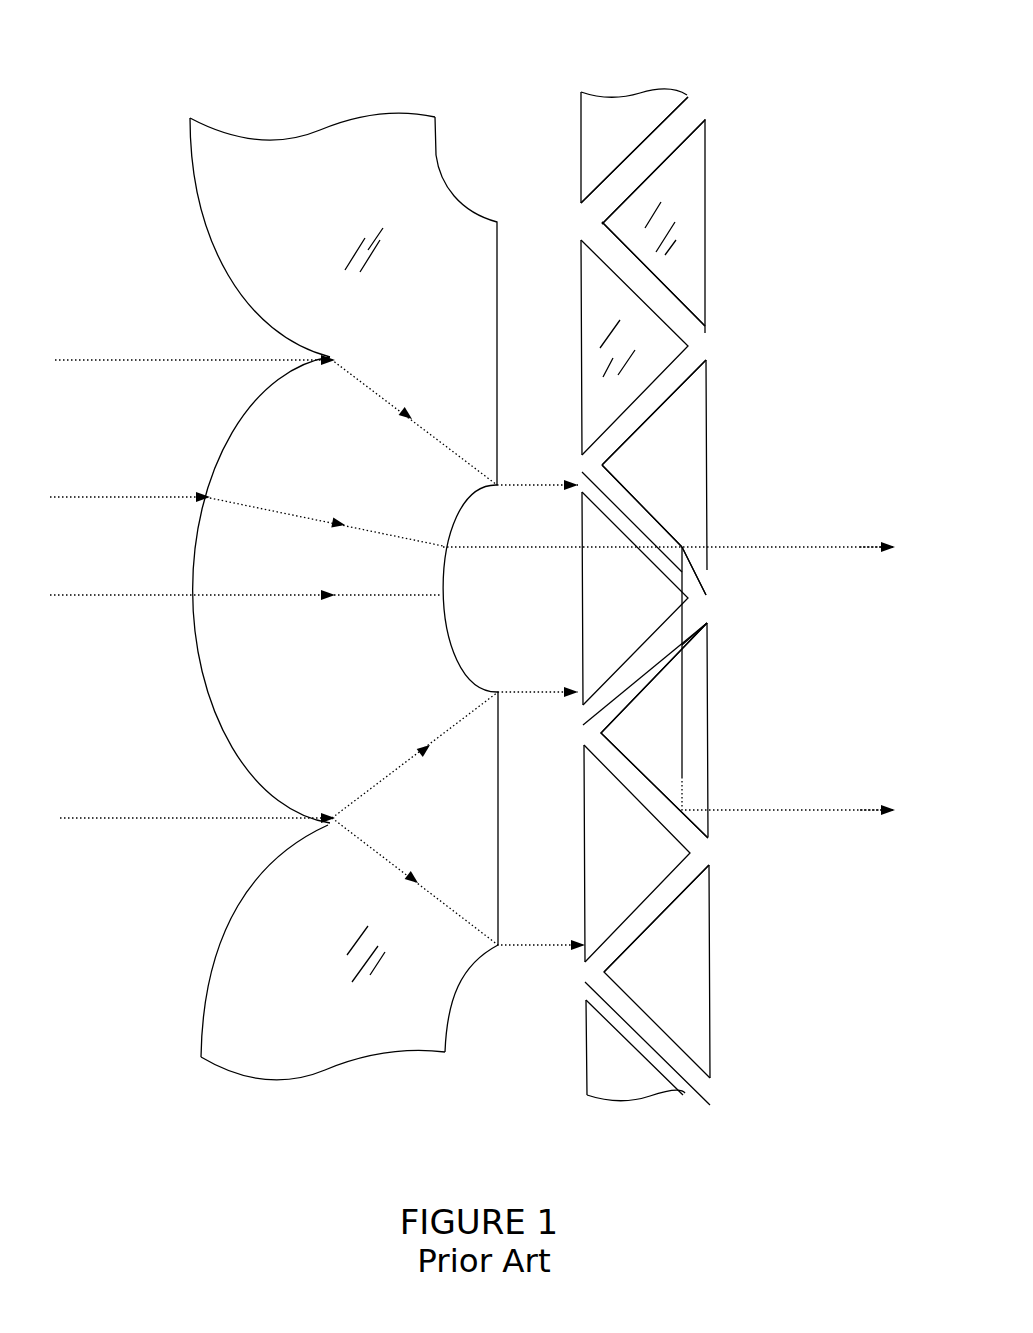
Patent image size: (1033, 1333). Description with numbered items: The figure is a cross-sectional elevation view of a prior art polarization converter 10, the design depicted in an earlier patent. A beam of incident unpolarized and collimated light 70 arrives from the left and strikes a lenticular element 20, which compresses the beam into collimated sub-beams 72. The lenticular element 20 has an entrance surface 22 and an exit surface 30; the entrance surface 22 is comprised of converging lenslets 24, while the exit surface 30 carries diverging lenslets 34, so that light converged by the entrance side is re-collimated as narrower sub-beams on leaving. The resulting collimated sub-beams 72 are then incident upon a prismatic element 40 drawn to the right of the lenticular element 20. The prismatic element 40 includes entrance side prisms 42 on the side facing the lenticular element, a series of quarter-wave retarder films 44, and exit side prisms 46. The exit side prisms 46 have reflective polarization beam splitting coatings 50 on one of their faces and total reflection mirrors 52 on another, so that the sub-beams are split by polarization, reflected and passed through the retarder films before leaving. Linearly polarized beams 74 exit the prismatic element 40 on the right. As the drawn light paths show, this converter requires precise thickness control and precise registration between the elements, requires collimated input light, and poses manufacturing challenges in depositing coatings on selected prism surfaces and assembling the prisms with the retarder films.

The polarization converter 10 is at (524, 27).
The lenticular element 20 is at (291, 978).
The entrance surface 22 is at (192, 112).
The converging lenslets 24 is at (200, 665).
The exit surface 30 is at (435, 112).
The diverging lenslets 34 is at (443, 637).
The prismatic element 40 is at (640, 1082).
The entrance side prisms 42 is at (604, 293).
The quarter-wave retarder films 44 is at (640, 527).
The exit side prisms 46 is at (680, 293).
The reflective polarization beam splitting coatings 50 is at (700, 562).
The total reflection mirrors 52 is at (703, 823).
The incident unpolarized and collimated light 70 is at (132, 827).
The collimated sub-beams 72 is at (548, 698).
The linearly polarized beams 74 is at (852, 565).